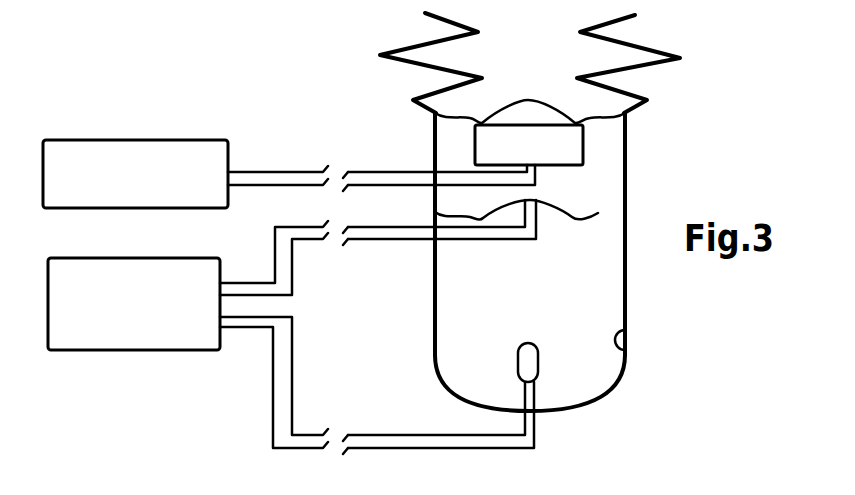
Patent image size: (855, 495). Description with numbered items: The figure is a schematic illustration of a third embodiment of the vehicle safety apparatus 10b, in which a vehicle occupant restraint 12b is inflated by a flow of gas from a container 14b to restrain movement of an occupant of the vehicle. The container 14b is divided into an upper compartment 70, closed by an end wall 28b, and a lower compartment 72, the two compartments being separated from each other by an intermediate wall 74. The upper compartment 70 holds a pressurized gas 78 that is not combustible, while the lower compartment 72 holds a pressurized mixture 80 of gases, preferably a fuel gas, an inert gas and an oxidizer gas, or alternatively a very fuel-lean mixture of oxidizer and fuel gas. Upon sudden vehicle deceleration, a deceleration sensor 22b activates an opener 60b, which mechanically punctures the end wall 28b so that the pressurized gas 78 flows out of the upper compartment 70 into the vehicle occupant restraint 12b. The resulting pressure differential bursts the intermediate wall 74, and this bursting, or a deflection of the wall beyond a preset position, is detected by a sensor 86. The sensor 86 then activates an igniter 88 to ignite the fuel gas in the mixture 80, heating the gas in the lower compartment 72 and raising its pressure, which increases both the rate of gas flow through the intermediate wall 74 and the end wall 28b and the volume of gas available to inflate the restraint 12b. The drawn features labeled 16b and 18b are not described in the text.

The vehicle safety apparatus 10b is at (720, 73).
The vehicle occupant restraint 12b is at (680, 58).
The container 14b is at (628, 176).
The housing side wall 16b is at (627, 350).
The housing interior 18b is at (573, 303).
The deceleration sensor 22b is at (220, 143).
The end wall 28b is at (530, 100).
The opener 60b is at (475, 145).
The upper compartment 70 is at (458, 162).
The lower compartment 72 is at (575, 352).
The intermediate wall 74 is at (598, 213).
The pressurized gas 78 is at (588, 177).
The pressurized mixture of gases 80 is at (457, 338).
The sensor 86 is at (135, 258).
The igniter 88 is at (527, 363).